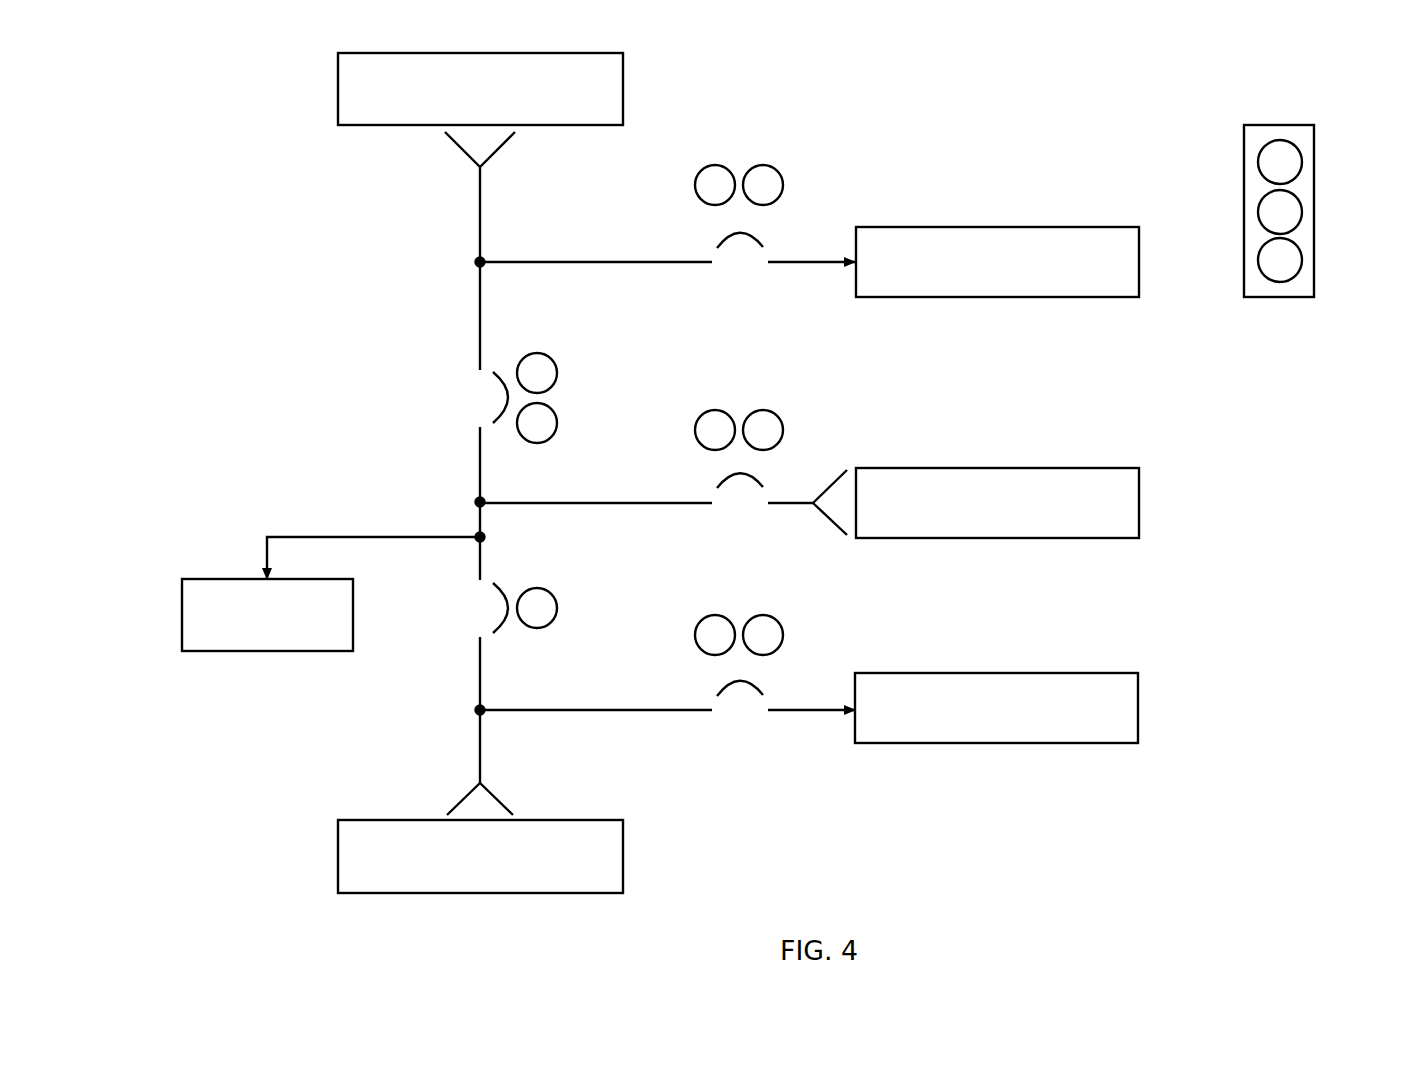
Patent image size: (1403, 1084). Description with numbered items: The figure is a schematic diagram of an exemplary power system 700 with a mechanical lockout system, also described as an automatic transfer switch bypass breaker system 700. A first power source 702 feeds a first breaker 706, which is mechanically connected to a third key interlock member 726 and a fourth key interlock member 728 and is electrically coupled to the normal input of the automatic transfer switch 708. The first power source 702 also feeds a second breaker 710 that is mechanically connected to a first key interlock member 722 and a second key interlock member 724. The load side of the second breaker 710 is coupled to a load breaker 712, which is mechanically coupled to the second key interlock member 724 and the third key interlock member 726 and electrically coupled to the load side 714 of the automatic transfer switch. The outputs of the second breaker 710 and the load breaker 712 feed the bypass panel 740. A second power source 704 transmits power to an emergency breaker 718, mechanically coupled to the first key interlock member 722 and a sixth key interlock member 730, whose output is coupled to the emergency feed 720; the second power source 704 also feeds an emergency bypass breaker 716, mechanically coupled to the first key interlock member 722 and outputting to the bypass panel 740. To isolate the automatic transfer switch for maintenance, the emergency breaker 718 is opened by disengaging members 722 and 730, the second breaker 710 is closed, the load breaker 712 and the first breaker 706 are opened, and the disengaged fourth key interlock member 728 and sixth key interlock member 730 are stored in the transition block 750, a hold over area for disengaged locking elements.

The power system 700 is at (1178, 872).
The first power source 702 is at (623, 70).
The second power source 704 is at (623, 858).
The first breaker 706 is at (735, 236).
The automatic transfer switch 708 is at (1139, 261).
The second breaker 710 is at (500, 400).
The load breaker 712 is at (735, 478).
The automatic transfer switch load side 714 is at (1139, 502).
The emergency bypass breaker 716 is at (500, 607).
The emergency breaker 718 is at (735, 686).
The emergency breaker feed 720 is at (1139, 708).
The first key interlock member 722 is at (557, 370).
The second key interlock member 724 is at (557, 418).
The third key interlock member 726 is at (723, 166).
The fourth key interlock member 728 is at (770, 167).
The sixth key interlock member 730 is at (777, 618).
The bypass panel 740 is at (182, 620).
The transition block 750 is at (1314, 132).